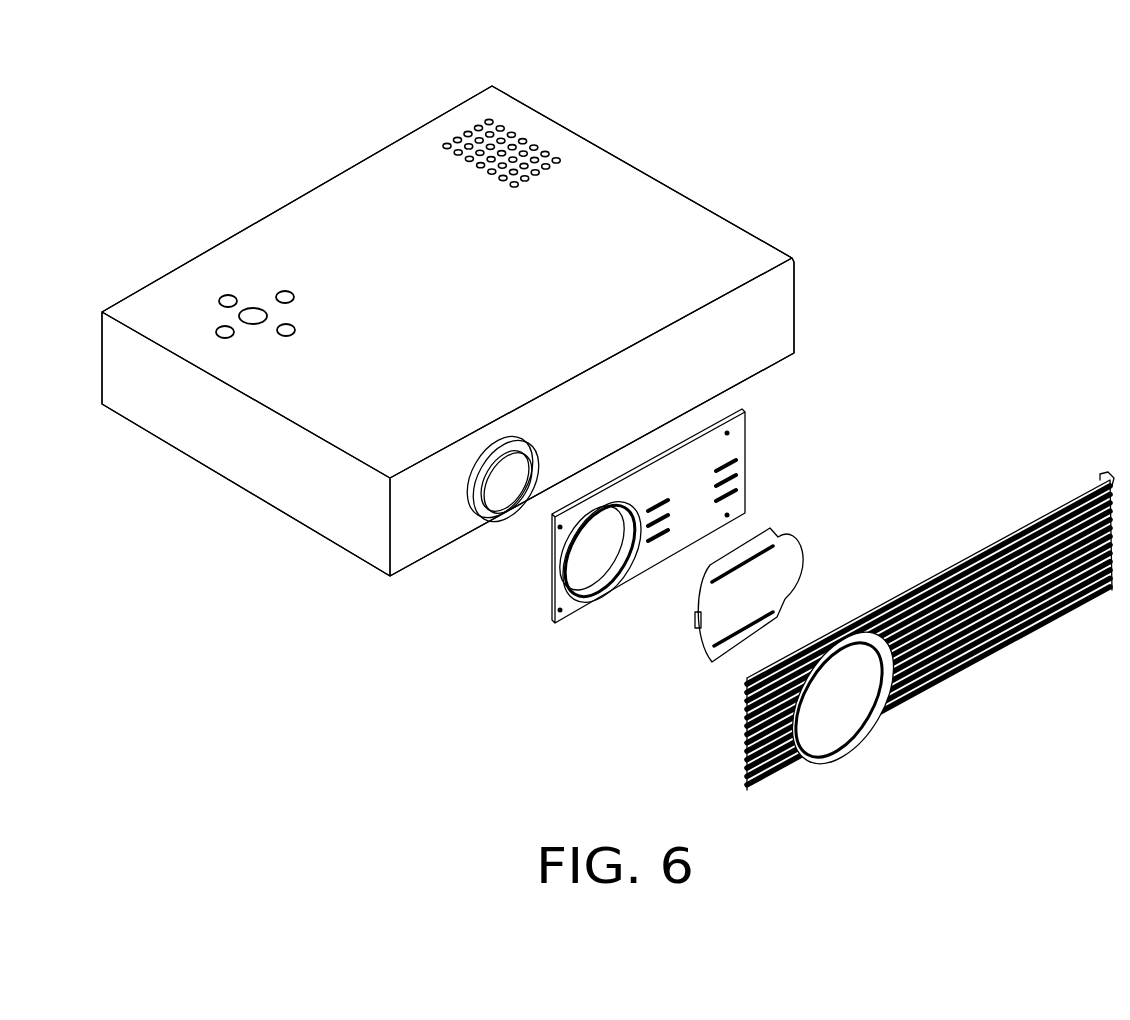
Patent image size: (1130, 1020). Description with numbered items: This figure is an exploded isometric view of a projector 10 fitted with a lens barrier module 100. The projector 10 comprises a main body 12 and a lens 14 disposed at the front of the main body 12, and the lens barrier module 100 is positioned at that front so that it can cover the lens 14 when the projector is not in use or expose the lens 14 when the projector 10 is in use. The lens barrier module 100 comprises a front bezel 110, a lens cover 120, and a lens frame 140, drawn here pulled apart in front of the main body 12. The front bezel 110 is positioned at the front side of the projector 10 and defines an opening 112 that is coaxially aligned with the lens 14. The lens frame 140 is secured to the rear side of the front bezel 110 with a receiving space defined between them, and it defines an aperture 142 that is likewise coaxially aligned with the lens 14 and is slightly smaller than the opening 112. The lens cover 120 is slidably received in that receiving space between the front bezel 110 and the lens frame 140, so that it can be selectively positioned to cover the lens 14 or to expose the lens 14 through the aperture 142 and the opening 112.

The projector 10 is at (593, 82).
The main body 12 is at (678, 243).
The lens 14 is at (493, 493).
The lens barrier module 100 is at (822, 392).
The front bezel 110 is at (920, 607).
The opening 112 is at (835, 712).
The lens cover 120 is at (792, 547).
The lens frame 140 is at (738, 443).
The aperture 142 is at (583, 560).